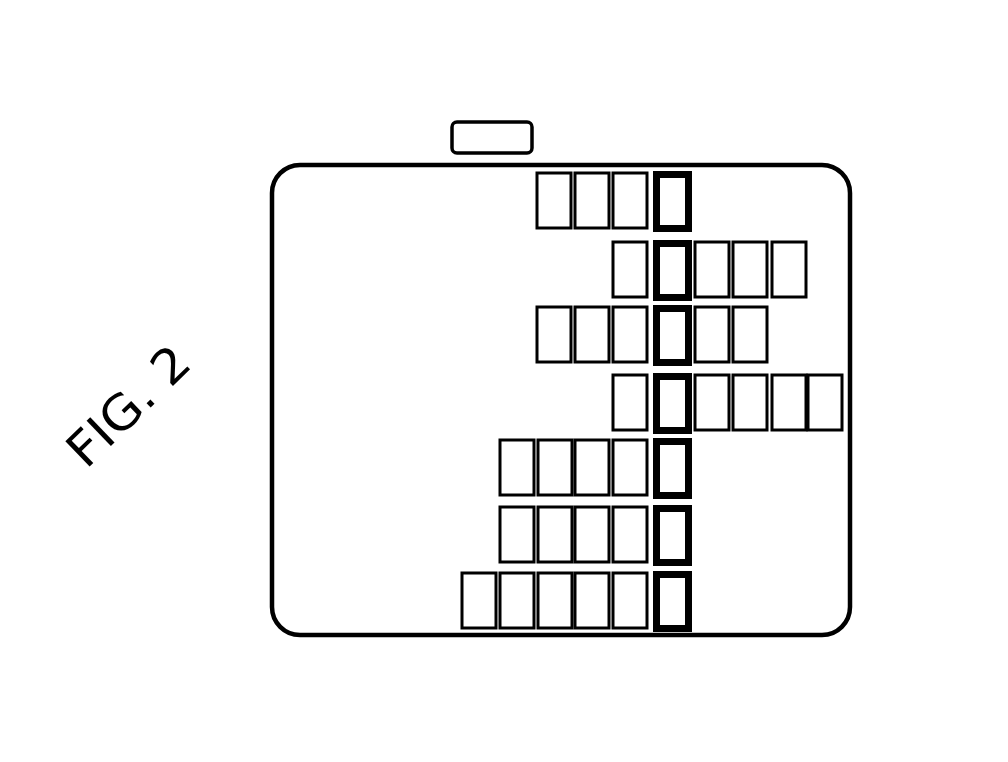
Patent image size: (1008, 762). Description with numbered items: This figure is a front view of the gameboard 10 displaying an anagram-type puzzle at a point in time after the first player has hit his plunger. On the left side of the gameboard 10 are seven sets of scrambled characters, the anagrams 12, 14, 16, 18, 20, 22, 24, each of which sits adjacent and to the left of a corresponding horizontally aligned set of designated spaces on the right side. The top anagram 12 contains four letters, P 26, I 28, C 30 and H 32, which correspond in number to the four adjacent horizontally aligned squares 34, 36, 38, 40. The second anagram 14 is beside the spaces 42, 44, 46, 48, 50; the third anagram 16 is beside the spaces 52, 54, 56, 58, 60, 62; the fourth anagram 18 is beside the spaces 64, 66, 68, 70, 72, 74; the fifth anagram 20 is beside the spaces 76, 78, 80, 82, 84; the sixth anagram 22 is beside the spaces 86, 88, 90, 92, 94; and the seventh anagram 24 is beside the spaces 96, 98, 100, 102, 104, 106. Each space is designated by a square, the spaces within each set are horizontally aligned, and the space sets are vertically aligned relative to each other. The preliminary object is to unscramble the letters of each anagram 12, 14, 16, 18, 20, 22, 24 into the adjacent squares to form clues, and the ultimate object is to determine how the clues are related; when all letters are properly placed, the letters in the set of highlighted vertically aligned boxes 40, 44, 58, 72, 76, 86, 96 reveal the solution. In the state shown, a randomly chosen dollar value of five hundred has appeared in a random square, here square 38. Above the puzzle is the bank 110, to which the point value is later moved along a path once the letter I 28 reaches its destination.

The gameboard 10 is at (283, 178).
The anagram 12 is at (328, 178).
The anagram 14 is at (286, 273).
The anagram 16 is at (278, 336).
The anagram 18 is at (278, 406).
The anagram 20 is at (284, 470).
The anagram 22 is at (284, 535).
The anagram 24 is at (272, 602).
The letter P 26 is at (332, 183).
The letter I 28 is at (358, 183).
The letter C 30 is at (384, 183).
The letter H 32 is at (406, 183).
The square 34 is at (553, 173).
The square 36 is at (590, 173).
The square 38 is at (627, 173).
The highlighted square 40 is at (672, 173).
The designated space 42 is at (635, 241).
The highlighted box 44 is at (711, 209).
The designated space 46 is at (715, 241).
The designated space 48 is at (748, 241).
The designated space 50 is at (779, 241).
The designated space 52 is at (722, 278).
The designated space 54 is at (741, 289).
The designated space 56 is at (760, 300).
The highlighted box 58 is at (783, 314).
The designated space 60 is at (801, 326).
The designated space 62 is at (770, 316).
The designated space 64 is at (858, 402).
The designated space 66 is at (840, 402).
The designated space 68 is at (820, 410).
The designated space 70 is at (801, 421).
The highlighted box 72 is at (783, 433).
The designated space 74 is at (760, 444).
The highlighted box 76 is at (723, 492).
The designated space 78 is at (741, 504).
The designated space 80 is at (760, 516).
The designated space 82 is at (783, 529).
The designated space 84 is at (778, 578).
The highlighted box 86 is at (771, 591).
The designated space 88 is at (720, 591).
The designated space 90 is at (722, 591).
The designated space 92 is at (667, 591).
The designated space 94 is at (630, 591).
The highlighted box 96 is at (660, 632).
The designated space 98 is at (632, 628).
The designated space 100 is at (590, 628).
The designated space 102 is at (552, 628).
The designated space 104 is at (508, 628).
The designated space 106 is at (470, 628).
The bank 110 is at (492, 122).